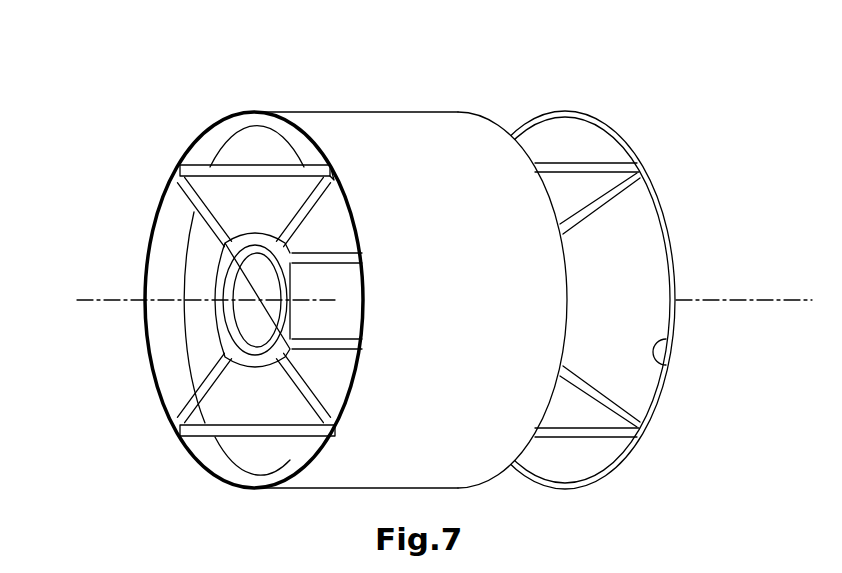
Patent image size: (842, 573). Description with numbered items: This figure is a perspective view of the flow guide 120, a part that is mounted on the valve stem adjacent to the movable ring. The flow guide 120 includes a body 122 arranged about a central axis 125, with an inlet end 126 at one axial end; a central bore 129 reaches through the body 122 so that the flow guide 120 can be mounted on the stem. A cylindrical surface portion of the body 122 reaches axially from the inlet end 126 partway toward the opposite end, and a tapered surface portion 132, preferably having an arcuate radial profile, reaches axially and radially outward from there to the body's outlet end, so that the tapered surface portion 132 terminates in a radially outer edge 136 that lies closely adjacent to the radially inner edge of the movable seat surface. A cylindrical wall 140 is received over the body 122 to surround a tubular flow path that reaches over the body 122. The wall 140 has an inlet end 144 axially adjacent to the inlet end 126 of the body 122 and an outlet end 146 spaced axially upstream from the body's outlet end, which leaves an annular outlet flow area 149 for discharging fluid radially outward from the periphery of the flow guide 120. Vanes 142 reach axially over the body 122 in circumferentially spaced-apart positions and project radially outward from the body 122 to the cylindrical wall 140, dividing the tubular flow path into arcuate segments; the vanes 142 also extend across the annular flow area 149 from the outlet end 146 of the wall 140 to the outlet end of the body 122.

The flow guide 120 is at (272, 80).
The body 122 is at (323, 305).
The central axis 125 is at (118, 300).
The inlet end 126 is at (222, 318).
The central bore 129 is at (247, 323).
The tapered surface portion 132 is at (635, 253).
The radially outer edge 136 is at (667, 366).
The cylindrical wall 140 is at (388, 147).
The vanes 142 is at (308, 206).
The inlet end 144 is at (158, 213).
The outlet end 146 is at (493, 133).
The annular outlet flow area 149 is at (567, 130).